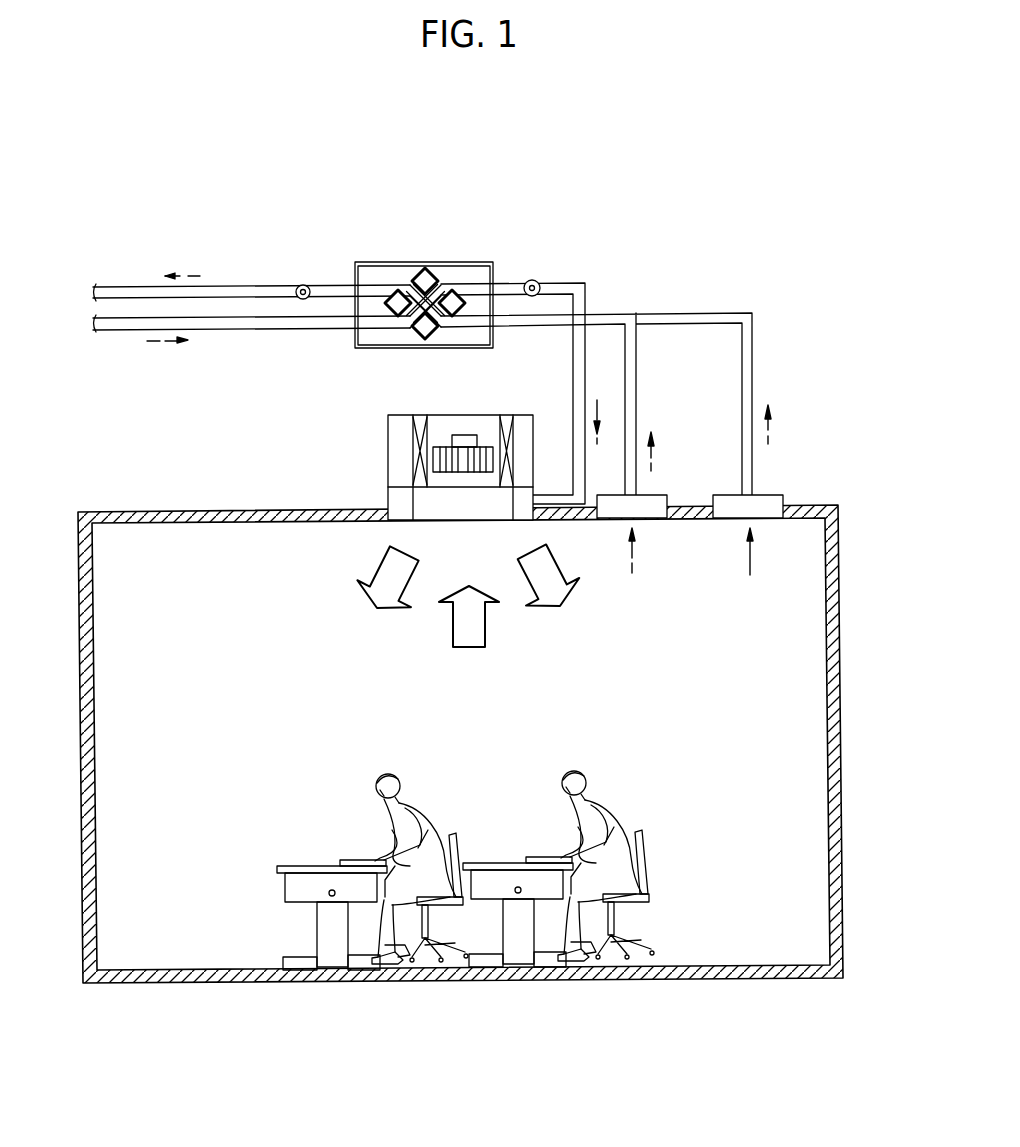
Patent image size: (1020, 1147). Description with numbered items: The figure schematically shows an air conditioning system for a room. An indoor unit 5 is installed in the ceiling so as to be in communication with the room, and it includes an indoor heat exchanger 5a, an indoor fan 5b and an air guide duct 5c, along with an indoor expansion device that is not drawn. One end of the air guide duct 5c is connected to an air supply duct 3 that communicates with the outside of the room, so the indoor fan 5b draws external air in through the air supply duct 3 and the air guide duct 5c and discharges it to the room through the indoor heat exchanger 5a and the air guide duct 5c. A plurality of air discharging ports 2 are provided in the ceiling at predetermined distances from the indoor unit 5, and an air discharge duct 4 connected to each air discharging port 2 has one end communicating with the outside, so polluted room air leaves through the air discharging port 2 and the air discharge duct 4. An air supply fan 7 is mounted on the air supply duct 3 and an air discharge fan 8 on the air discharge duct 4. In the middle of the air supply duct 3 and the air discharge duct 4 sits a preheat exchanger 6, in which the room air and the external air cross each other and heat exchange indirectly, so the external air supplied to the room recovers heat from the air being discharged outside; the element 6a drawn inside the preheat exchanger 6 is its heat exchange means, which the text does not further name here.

The air discharging port 2 is at (657, 500).
The air supply duct 3 is at (246, 332).
The air discharge duct 4 is at (246, 285).
The indoor unit 5 is at (422, 440).
The indoor heat exchanger 5a is at (420, 418).
The indoor fan 5b is at (466, 448).
The air guide duct 5c is at (395, 500).
The preheat exchanger 6 is at (403, 262).
The heat exchange element 6a is at (432, 268).
The air supply fan 7 is at (536, 280).
The air discharge fan 8 is at (303, 284).